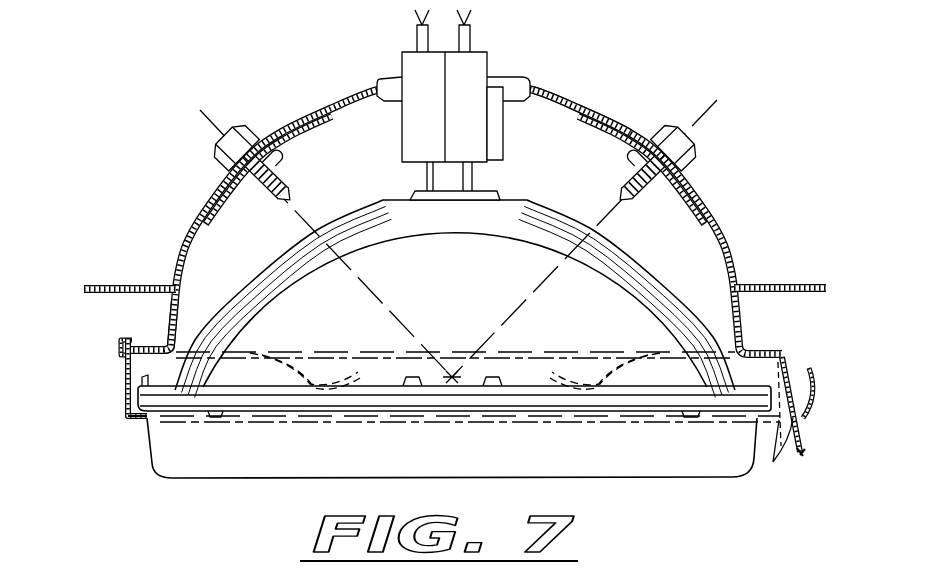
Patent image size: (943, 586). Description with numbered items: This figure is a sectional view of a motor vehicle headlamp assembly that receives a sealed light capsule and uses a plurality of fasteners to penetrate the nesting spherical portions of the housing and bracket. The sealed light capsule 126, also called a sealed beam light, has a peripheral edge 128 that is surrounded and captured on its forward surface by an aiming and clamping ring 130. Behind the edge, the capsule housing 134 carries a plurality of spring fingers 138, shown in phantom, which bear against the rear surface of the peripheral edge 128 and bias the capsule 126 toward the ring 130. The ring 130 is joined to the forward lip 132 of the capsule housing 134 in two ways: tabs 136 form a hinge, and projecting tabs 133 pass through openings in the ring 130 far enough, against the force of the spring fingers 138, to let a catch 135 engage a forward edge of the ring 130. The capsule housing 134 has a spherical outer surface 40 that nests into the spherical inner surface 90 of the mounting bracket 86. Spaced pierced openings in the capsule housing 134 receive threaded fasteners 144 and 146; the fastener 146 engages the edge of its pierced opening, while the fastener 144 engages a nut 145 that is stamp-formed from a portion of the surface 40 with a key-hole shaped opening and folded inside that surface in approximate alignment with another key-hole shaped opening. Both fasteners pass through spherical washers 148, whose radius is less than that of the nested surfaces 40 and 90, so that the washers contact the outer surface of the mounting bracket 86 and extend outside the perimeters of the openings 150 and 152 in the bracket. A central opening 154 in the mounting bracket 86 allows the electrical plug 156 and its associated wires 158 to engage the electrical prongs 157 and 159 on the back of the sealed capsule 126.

The spherical outer surface 40 is at (738, 322).
The mounting bracket 86 is at (117, 288).
The spherical inner surface 90 is at (583, 122).
The sealed light capsule 126 is at (567, 470).
The peripheral edge 128 is at (447, 398).
The aiming and clamping ring 130 is at (773, 412).
The forward lip 132 is at (788, 360).
The projecting tabs 133 is at (803, 452).
The capsule housing 134 is at (188, 294).
The catch 135 is at (805, 420).
The tabs 136 is at (128, 340).
The spring fingers 138 is at (315, 382).
The threaded fastener 144 is at (245, 128).
The nut 145 is at (226, 178).
The threaded fastener 146 is at (690, 163).
The spherical washers 148 is at (705, 203).
The opening 150 is at (247, 183).
The opening 152 is at (644, 137).
The central opening 154 is at (397, 85).
The electrical plug 156 is at (478, 70).
The electrical prong 157 is at (427, 180).
The wires 158 is at (473, 33).
The electrical prong 159 is at (470, 180).